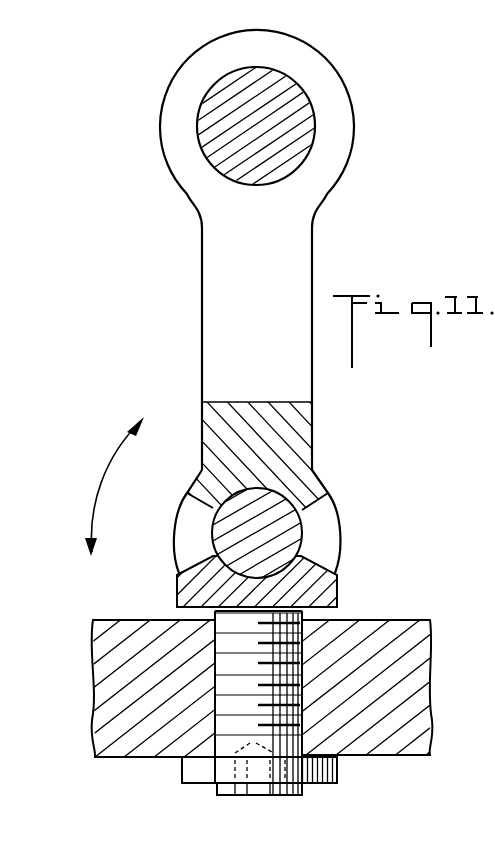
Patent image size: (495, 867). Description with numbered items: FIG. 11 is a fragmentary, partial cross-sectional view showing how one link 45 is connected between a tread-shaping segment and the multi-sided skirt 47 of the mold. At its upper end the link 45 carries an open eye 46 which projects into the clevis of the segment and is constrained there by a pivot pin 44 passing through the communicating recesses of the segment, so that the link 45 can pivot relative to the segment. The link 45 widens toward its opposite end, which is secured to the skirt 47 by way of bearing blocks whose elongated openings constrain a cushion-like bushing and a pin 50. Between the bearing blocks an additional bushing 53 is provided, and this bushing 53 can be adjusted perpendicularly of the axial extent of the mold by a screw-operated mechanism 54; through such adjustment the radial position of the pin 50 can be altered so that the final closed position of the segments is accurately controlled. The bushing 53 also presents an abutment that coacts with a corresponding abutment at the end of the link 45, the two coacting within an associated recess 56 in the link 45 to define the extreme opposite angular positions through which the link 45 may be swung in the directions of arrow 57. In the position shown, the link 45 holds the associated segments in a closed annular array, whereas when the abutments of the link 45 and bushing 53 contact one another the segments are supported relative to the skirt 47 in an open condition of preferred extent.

The pivot pin 44 is at (300, 145).
The link 45 is at (214, 286).
The open eye 46 is at (308, 118).
The skirt 47 is at (413, 652).
The pin 50 is at (288, 527).
The bushing 53 is at (332, 592).
The screw-operated mechanism 54 is at (302, 795).
The recess 56 is at (178, 536).
The arrow 57 is at (112, 461).